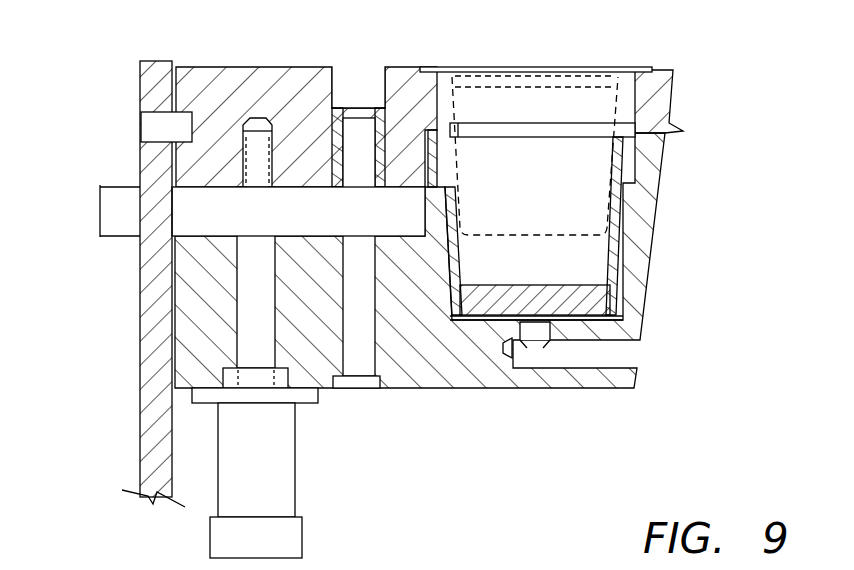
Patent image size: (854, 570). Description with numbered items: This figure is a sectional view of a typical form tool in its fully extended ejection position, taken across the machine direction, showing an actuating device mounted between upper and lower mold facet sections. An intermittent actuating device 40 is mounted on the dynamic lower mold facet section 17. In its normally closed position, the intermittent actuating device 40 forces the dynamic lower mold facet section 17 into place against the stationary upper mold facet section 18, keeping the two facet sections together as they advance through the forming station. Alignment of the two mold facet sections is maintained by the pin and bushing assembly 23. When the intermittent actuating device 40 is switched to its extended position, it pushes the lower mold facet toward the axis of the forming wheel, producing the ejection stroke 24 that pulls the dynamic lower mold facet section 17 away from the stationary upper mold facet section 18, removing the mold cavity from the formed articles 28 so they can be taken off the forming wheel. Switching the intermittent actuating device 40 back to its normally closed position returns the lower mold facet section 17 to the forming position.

The dynamic lower mold facet section 17 is at (491, 390).
The stationary upper mold facet section 18 is at (187, 66).
The pin and bushing assembly 23 is at (356, 118).
The ejection stroke 24 is at (100, 205).
The formed articles 28 is at (512, 72).
The intermittent actuating device 40 is at (297, 468).